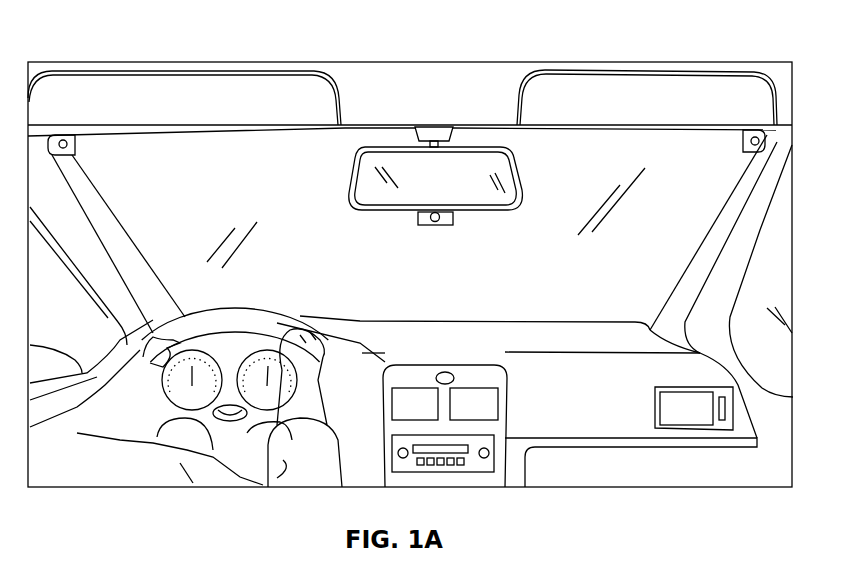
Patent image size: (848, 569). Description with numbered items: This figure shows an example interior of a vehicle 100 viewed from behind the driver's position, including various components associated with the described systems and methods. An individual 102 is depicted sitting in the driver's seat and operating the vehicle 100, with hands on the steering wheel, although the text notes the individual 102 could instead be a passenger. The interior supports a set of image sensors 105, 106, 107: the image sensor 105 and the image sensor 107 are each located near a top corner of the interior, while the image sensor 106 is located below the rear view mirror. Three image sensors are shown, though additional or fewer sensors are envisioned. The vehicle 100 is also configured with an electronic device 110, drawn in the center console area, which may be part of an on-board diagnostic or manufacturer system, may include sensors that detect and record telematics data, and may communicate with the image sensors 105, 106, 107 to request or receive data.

The vehicle 100 is at (486, 34).
The individual 102 is at (186, 403).
The image sensor 105 is at (77, 145).
The image sensor 106 is at (438, 221).
The image sensor 107 is at (743, 142).
The electronic device 110 is at (473, 375).